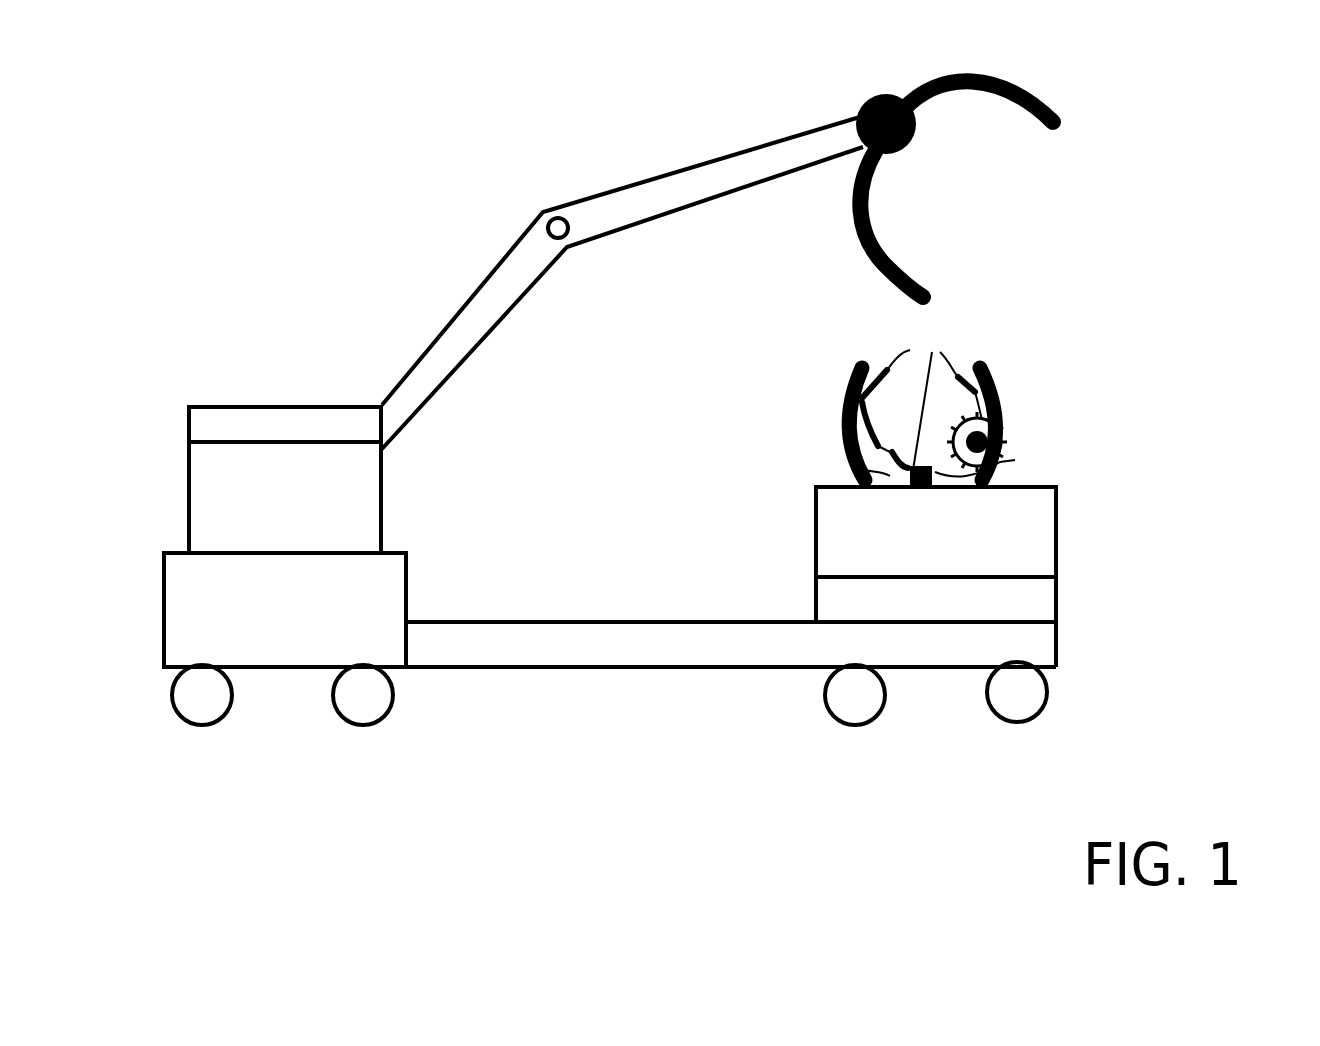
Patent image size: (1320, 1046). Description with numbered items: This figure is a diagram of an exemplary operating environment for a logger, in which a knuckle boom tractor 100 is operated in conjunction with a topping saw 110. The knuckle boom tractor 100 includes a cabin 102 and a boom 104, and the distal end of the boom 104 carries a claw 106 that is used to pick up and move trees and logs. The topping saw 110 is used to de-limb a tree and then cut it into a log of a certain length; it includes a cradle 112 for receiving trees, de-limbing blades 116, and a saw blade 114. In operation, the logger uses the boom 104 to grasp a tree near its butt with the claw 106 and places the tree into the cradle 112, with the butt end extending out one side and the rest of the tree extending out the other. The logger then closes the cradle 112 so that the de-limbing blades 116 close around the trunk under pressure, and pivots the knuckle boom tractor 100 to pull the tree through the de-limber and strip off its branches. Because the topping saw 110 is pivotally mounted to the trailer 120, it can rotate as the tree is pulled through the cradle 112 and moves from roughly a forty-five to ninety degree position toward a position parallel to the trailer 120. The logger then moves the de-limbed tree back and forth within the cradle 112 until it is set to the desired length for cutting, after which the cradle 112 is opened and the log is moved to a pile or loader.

The knuckle boom tractor 100 is at (205, 385).
The cabin 102 is at (383, 502).
The boom 104 is at (681, 168).
The claw 106 is at (1000, 78).
The topping saw 110 is at (1045, 430).
The cradle 112 is at (835, 460).
The saw blade 114 is at (993, 463).
The de-limbing blades 116 is at (958, 376).
The trailer 120 is at (587, 613).